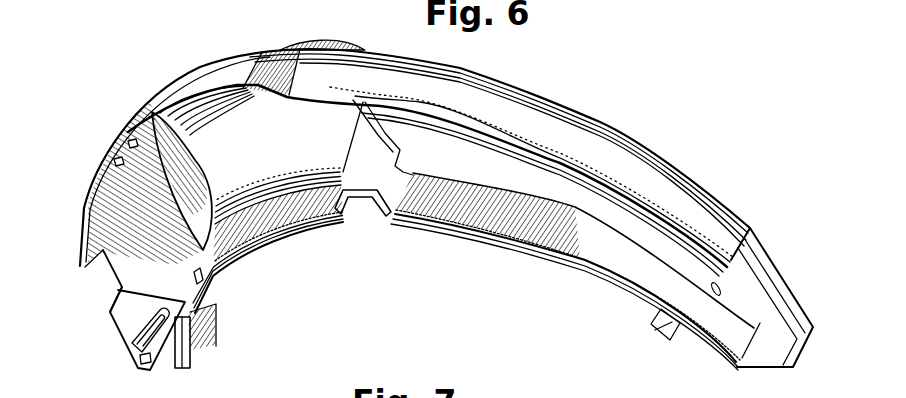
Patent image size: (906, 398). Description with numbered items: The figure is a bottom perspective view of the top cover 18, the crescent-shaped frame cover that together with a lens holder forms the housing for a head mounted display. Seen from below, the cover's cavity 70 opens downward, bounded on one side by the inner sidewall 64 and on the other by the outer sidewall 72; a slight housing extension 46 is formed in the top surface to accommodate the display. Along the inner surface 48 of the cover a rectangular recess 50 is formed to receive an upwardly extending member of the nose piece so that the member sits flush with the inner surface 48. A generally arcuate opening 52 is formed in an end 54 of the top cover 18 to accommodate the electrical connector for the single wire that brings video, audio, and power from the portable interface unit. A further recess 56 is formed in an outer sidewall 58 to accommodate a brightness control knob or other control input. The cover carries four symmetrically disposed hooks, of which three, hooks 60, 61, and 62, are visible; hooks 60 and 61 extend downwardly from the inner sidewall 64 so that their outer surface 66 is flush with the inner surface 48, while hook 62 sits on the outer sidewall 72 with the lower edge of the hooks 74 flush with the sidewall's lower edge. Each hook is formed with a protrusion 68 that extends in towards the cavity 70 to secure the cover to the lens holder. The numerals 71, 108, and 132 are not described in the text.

The top cover 18 is at (778, 127).
The housing extension 46 is at (175, 74).
The inner surface 48 is at (503, 251).
The rectangular recess 50 is at (370, 209).
The arcuate opening 52 is at (161, 369).
The end 54 is at (137, 349).
The recess 56 is at (111, 287).
The outer sidewall 58 is at (118, 327).
The hook 60 is at (655, 313).
The hook 61 is at (207, 315).
The hook 62 is at (113, 165).
The inner sidewall 64 is at (570, 238).
The outer surface 66 is at (212, 337).
The protrusion 68 is at (664, 331).
The cavity 70 is at (470, 172).
The inner edge 71 is at (588, 173).
The outer sidewall 72 is at (543, 115).
The lower edge of the hooks 74 is at (100, 176).
The reference 108 is at (47, 15).
The reference 132 is at (822, 13).